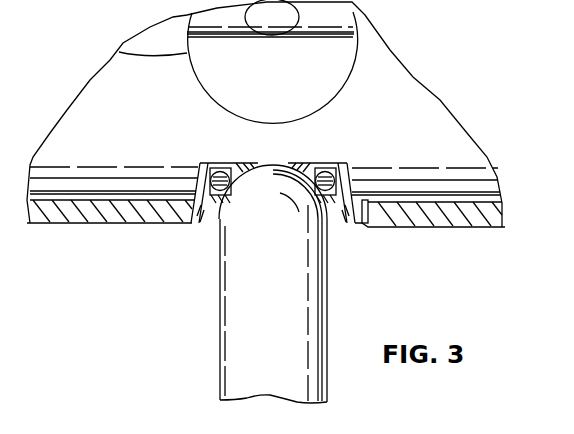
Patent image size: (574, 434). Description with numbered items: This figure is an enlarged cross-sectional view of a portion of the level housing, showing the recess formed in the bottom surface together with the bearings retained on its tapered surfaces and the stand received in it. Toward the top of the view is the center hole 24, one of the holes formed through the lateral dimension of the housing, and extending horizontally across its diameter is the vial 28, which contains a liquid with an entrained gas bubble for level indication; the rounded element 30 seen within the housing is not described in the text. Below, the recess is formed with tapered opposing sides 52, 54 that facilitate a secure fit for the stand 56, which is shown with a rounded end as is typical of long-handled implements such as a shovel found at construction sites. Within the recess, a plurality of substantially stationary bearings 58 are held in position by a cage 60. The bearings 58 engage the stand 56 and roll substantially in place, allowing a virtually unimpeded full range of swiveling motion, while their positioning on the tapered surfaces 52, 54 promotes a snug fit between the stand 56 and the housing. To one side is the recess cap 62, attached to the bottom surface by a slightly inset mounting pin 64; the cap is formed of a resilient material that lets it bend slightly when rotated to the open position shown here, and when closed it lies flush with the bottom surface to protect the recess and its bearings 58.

The center hole 24 is at (119, 52).
The vial 28 is at (303, 25).
The spherical member 30 is at (305, 61).
The tapered side 52 is at (200, 225).
The tapered side 54 is at (330, 165).
The stand 56 is at (243, 319).
The bearings 58 is at (220, 163).
The cage 60 is at (328, 163).
The recess cap 62 is at (423, 228).
The mounting pin 64 is at (363, 218).